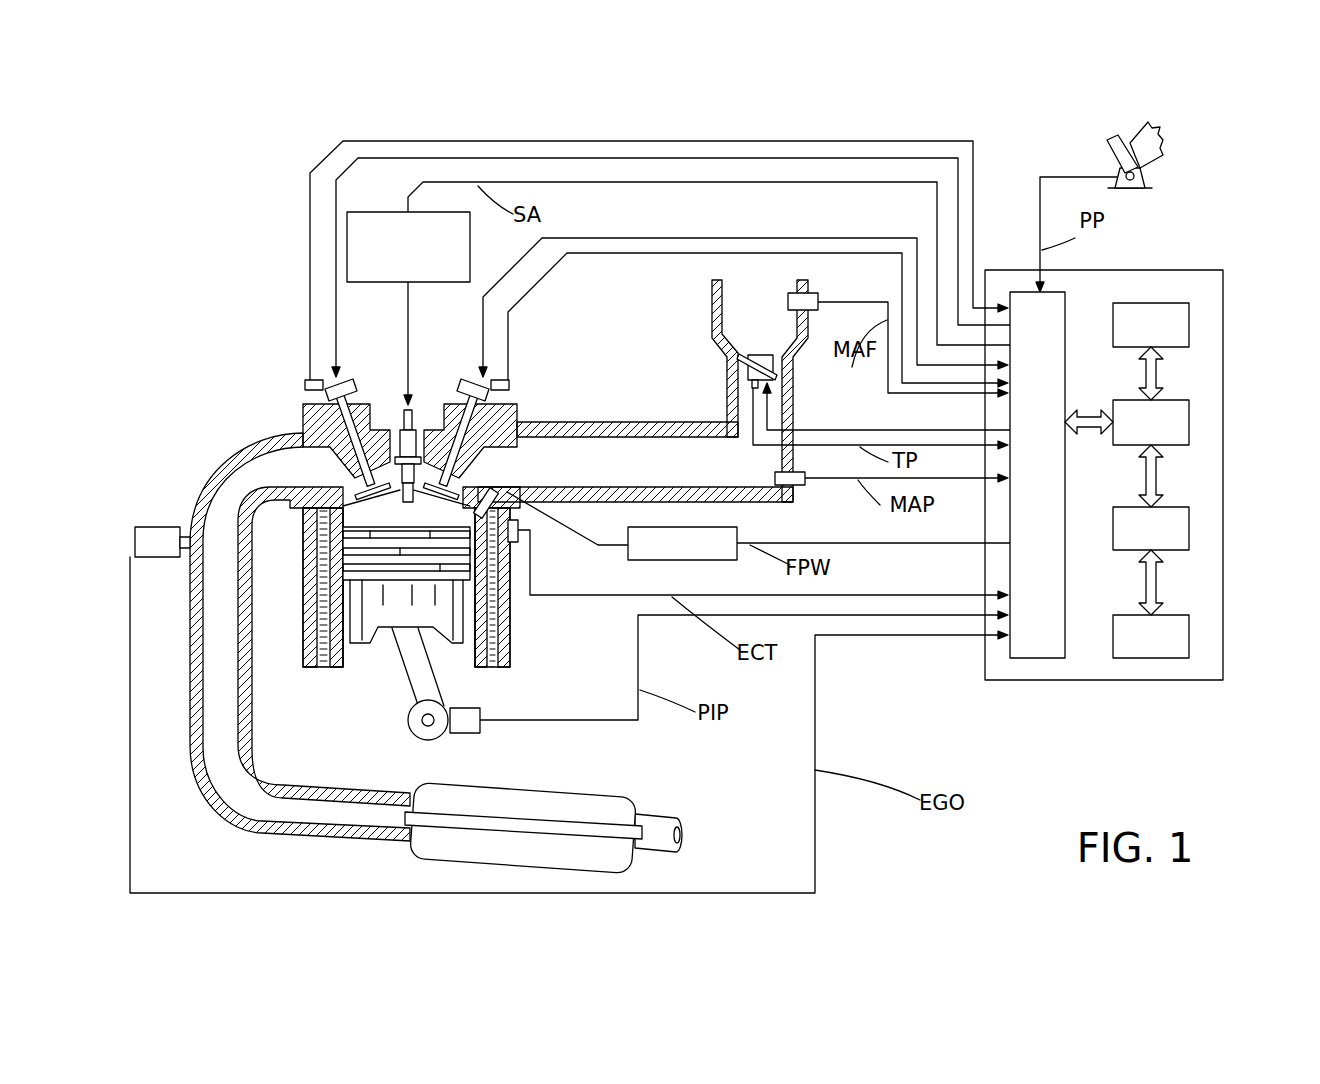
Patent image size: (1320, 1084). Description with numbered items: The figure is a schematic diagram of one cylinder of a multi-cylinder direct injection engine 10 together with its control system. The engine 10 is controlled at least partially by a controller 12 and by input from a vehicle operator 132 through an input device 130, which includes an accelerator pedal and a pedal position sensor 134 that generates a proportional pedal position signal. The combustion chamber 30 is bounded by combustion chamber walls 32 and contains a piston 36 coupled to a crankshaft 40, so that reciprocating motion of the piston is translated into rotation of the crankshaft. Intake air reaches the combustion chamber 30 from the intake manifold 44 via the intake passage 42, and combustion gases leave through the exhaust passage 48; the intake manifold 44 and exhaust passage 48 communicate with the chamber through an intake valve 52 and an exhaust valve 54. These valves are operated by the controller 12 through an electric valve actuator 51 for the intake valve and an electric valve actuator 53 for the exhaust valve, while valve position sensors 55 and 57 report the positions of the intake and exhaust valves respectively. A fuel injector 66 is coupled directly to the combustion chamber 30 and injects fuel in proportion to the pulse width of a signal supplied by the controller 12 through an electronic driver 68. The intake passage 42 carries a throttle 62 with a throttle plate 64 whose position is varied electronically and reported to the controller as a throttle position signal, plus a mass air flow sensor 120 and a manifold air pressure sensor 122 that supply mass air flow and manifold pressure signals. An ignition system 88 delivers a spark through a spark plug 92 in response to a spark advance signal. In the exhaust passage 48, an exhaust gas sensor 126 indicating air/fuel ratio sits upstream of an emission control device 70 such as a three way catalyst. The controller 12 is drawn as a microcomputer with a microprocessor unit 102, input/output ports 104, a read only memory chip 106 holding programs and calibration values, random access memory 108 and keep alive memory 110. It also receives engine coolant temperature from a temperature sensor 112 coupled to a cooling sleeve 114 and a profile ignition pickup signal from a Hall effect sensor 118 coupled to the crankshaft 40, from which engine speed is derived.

The engine 10 is at (229, 351).
The controller 12 is at (1152, 461).
The combustion chamber 30 is at (315, 600).
The combustion chamber walls 32 is at (345, 660).
The piston 36 is at (388, 612).
The crankshaft 40 is at (420, 742).
The intake passage 42 is at (745, 329).
The intake manifold 44 is at (677, 474).
The exhaust passage 48 is at (255, 482).
The electric valve actuator 51 is at (475, 380).
The intake valve 52 is at (477, 478).
The electric valve actuator 53 is at (345, 380).
The exhaust valve 54 is at (367, 483).
The valve position sensor 55 is at (495, 394).
The valve position sensor 57 is at (320, 395).
The throttle 62 is at (770, 364).
The throttle plate 64 is at (742, 368).
The fuel injector 66 is at (500, 512).
The electronic driver 68 is at (650, 560).
The emission control device 70 is at (597, 787).
The ignition system 88 is at (358, 212).
The spark plug 92 is at (413, 415).
The microprocessor unit 102 is at (1190, 422).
The input/output ports 104 is at (1067, 300).
The read only memory chip 106 is at (1190, 325).
The random access memory 108 is at (1190, 530).
The keep alive memory 110 is at (1190, 638).
The temperature sensor 112 is at (530, 540).
The cooling sleeve 114 is at (505, 615).
The Hall effect sensor 118 is at (472, 735).
The mass air flow sensor 120 is at (812, 296).
The manifold air pressure sensor 122 is at (800, 487).
The exhaust gas sensor 126 is at (135, 530).
The input device 130 is at (1107, 153).
The vehicle operator 132 is at (1163, 140).
The pedal position sensor 134 is at (1150, 177).